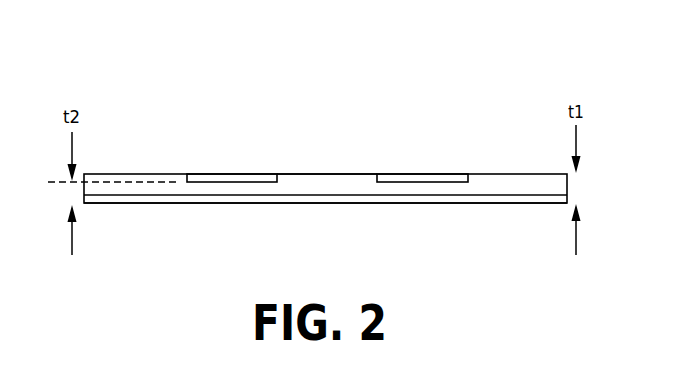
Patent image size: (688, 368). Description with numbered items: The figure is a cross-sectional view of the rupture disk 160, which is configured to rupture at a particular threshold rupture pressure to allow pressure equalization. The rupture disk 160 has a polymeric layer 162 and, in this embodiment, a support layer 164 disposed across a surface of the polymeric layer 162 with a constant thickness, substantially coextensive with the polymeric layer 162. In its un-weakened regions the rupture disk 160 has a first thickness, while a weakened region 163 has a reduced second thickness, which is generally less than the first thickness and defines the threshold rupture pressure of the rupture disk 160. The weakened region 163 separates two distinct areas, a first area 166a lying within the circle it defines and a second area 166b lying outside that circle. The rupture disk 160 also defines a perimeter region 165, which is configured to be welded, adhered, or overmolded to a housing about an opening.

The rupture disk 160 is at (251, 58).
The polymeric layer 162 is at (174, 180).
The weakened region 163 is at (242, 182).
The support layer 164 is at (327, 200).
The perimeter region 165 is at (538, 203).
The first area 166a is at (327, 175).
The second area 166b is at (495, 174).